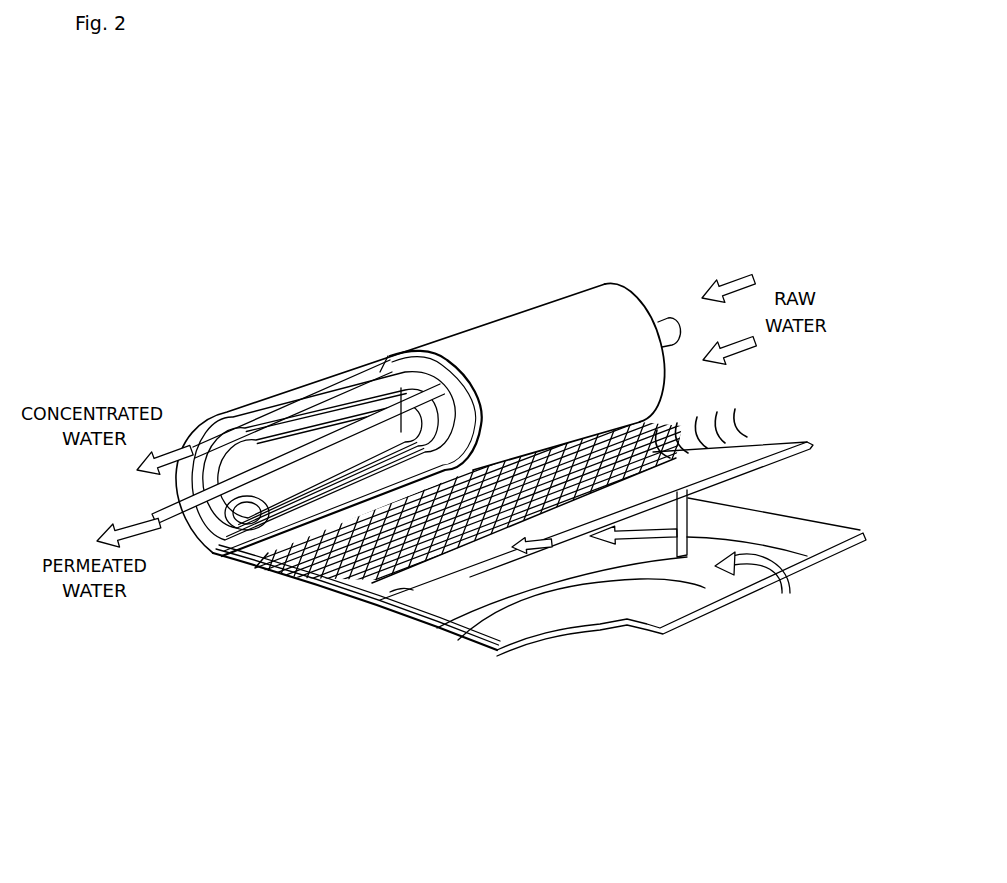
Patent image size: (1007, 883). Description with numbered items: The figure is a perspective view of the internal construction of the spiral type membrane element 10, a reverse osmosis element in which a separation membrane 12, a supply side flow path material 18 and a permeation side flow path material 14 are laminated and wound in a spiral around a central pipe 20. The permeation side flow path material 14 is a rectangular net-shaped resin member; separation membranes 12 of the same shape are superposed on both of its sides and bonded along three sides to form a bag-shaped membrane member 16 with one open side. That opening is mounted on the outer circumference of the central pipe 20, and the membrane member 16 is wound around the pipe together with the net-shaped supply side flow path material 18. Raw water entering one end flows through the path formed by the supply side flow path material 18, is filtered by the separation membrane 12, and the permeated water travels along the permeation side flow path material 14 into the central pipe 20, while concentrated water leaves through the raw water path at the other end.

The membrane element 10 is at (478, 228).
The separation membrane 12 is at (353, 608).
The permeation side flow path material 14 is at (737, 554).
The membrane member 16 is at (466, 657).
The supply side flow path material 18 is at (745, 427).
The central pipe 20 is at (668, 318).